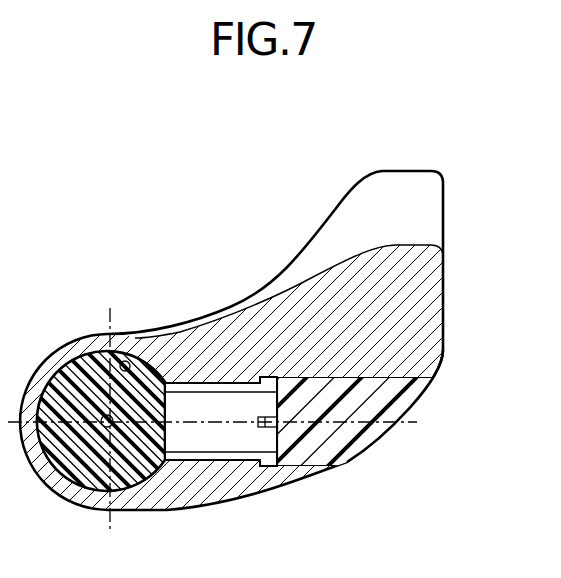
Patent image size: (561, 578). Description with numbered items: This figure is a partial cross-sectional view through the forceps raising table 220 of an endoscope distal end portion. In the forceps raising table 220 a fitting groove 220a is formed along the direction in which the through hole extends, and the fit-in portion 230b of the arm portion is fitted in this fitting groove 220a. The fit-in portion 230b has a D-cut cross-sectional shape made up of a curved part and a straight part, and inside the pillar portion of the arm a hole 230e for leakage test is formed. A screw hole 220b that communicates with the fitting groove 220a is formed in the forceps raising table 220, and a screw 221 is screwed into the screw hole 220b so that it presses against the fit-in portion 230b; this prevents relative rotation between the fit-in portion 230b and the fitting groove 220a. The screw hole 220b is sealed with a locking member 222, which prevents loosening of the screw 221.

The forceps raising table 220 is at (399, 166).
The fitting groove 220a is at (131, 363).
The screw hole 220b is at (249, 411).
The screw 221 is at (213, 464).
The locking member 222 is at (371, 444).
The fit-in portion 230b is at (92, 349).
The hole for leakage test 230e is at (104, 422).